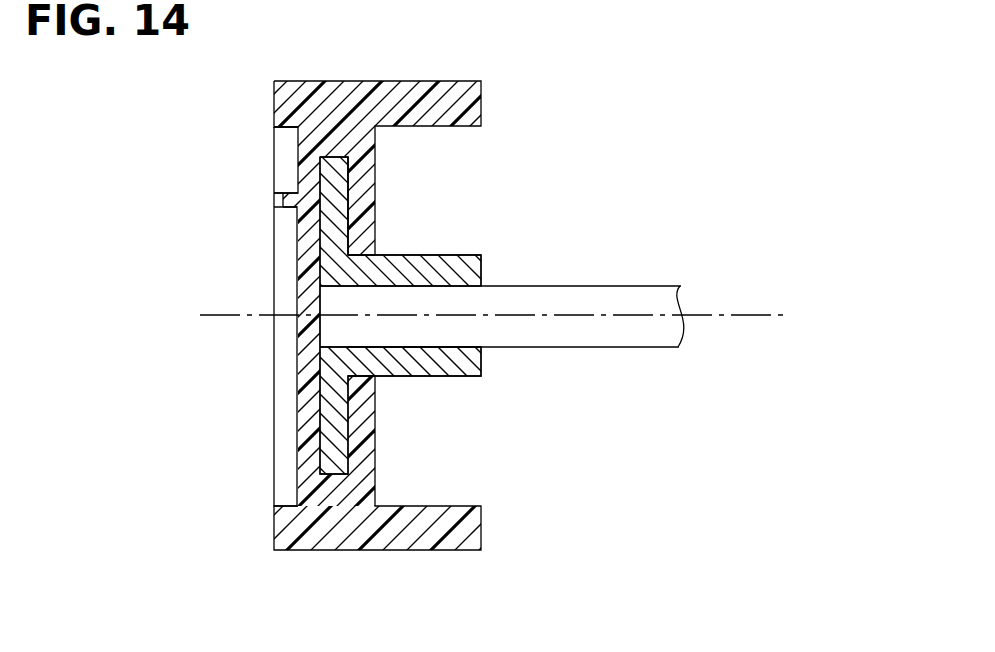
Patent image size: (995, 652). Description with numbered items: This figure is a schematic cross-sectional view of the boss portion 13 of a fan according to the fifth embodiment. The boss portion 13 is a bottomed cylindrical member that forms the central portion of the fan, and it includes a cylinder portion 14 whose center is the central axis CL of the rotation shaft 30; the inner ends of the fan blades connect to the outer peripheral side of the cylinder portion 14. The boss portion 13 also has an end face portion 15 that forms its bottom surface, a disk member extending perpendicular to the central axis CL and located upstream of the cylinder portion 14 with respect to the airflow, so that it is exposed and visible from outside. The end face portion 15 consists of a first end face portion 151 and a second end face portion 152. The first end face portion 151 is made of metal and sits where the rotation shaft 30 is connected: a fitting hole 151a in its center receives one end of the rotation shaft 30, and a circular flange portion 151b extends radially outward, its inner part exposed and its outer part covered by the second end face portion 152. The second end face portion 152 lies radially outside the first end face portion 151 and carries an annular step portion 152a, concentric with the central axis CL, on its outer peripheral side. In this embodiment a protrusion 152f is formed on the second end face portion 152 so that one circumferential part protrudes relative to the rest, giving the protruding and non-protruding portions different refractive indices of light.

The boss portion 13 is at (484, 310).
The cylinder portion 14 is at (473, 525).
The end face portion 15 is at (359, 312).
The first end face portion 151 is at (320, 367).
The fitting hole 151a is at (473, 287).
The flange portion 151b is at (343, 172).
The second end face portion 152 is at (298, 417).
The annular step portion 152a is at (283, 128).
The protrusion 152f is at (283, 207).
The rotation shaft 30 is at (672, 284).
The central axis CL is at (745, 314).